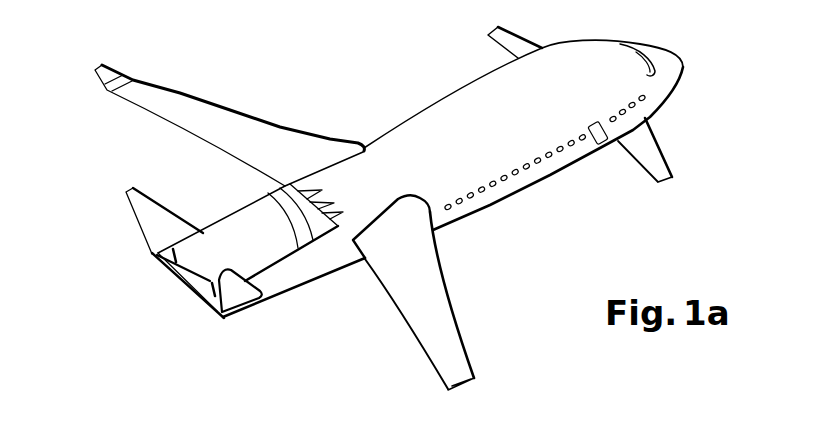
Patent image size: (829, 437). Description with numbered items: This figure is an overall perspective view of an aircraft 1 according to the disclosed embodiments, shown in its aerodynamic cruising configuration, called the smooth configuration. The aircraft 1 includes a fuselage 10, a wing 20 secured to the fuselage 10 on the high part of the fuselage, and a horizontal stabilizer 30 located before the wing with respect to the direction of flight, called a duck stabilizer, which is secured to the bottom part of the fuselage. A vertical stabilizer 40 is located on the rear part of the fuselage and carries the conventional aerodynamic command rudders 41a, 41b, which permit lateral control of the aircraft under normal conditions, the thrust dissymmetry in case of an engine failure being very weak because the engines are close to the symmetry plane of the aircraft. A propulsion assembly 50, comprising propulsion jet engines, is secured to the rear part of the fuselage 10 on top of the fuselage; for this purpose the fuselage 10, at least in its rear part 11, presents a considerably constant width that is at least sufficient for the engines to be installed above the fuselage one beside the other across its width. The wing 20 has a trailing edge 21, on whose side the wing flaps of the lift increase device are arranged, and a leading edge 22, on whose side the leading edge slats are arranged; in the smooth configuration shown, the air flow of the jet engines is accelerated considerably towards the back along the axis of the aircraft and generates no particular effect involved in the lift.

The aircraft 1 is at (559, 200).
The fuselage 10 is at (453, 108).
The rear part of the fuselage 11 is at (300, 287).
The wing 20 is at (219, 93).
The trailing edge 21 is at (413, 335).
The leading edge 22 is at (450, 290).
The horizontal stabilizer 30 is at (665, 143).
The vertical stabilizer 40 is at (122, 228).
The command rudder 41a is at (131, 191).
The command rudder 41b is at (237, 293).
The propulsion assembly 50 is at (226, 190).